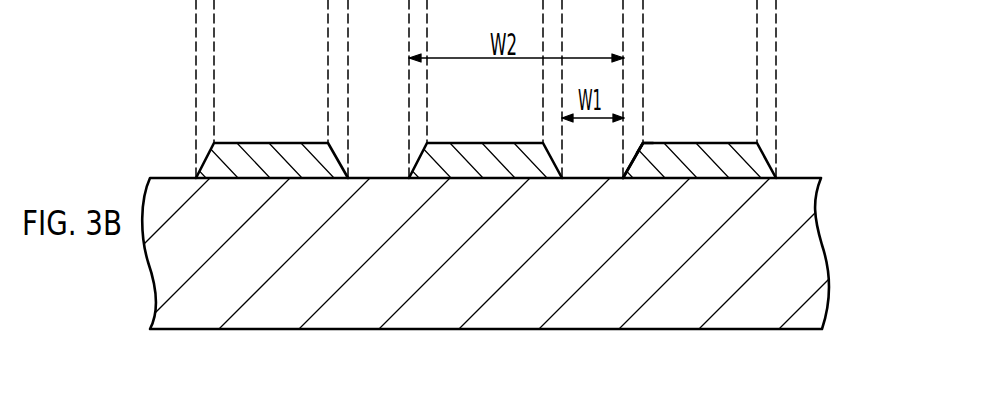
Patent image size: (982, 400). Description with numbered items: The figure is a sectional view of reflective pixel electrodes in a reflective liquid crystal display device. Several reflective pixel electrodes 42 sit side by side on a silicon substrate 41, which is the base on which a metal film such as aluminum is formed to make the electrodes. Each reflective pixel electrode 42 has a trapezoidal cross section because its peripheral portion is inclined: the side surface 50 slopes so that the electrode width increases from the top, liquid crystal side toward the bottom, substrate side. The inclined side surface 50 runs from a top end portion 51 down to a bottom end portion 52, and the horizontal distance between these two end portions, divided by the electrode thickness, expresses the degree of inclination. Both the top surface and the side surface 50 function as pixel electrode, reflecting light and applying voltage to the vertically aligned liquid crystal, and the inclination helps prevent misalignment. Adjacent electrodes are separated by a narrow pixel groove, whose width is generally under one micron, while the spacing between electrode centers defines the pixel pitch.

The silicon substrate 41 is at (807, 262).
The reflective pixel electrode 42 is at (762, 160).
The side surface 50 is at (633, 155).
The top end portion 51 is at (643, 143).
The bottom end portion 52 is at (623, 155).